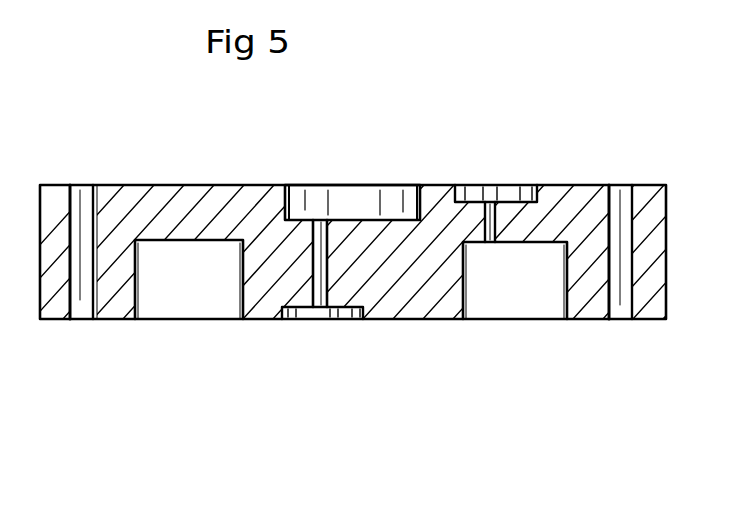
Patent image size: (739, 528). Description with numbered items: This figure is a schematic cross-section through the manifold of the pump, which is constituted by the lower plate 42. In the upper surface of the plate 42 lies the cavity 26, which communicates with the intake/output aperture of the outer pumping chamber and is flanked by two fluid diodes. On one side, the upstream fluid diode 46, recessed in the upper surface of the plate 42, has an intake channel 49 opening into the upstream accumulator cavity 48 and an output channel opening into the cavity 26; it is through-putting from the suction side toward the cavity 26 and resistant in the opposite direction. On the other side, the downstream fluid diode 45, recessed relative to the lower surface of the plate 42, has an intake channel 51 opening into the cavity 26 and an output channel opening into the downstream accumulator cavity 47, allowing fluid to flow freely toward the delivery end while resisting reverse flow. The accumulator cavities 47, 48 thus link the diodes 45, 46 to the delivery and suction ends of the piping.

The lower plate 42 is at (113, 203).
The cavity 26 is at (348, 205).
The downstream fluid diode 45 is at (335, 318).
The upstream fluid diode 46 is at (478, 192).
The downstream accumulator cavity 47 is at (178, 293).
The upstream accumulator cavity 48 is at (503, 297).
The intake channel 49 is at (517, 200).
The intake channel 51 is at (310, 260).